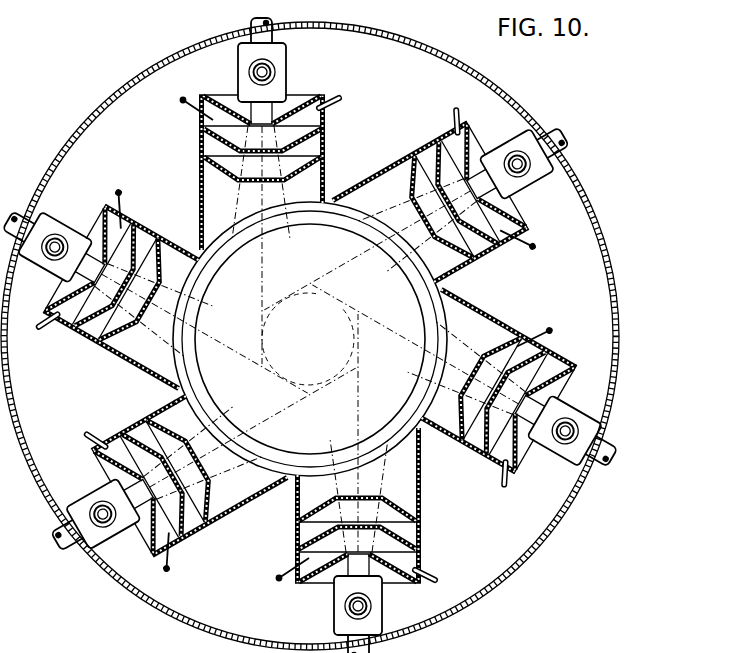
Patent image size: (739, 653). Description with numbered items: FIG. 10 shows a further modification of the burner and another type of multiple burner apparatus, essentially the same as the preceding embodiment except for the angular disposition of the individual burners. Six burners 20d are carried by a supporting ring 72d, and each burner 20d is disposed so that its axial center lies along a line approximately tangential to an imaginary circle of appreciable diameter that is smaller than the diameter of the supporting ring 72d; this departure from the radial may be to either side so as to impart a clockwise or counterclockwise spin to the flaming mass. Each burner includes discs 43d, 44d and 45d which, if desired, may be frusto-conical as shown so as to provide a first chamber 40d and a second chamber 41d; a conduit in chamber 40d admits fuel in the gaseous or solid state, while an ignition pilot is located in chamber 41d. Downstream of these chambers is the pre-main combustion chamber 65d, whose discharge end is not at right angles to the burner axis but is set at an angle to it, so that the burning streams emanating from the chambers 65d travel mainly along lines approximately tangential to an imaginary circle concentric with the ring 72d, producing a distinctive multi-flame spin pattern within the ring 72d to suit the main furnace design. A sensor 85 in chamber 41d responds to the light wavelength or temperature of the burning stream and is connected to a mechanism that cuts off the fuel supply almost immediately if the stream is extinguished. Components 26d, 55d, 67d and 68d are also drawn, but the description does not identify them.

The burner 20d is at (332, 157).
The motor 26d is at (278, 68).
The chamber 40d is at (212, 122).
The chamber 41d is at (210, 152).
The disc 43d is at (63, 296).
The disc 44d is at (120, 425).
The disc 45d is at (130, 430).
The discharge tube 55d is at (340, 104).
The pre-main combustion chamber 65d is at (310, 339).
The side wall 67d is at (205, 224).
The outer casing 68d is at (600, 237).
The supporting ring 72d is at (185, 398).
The sensor 85 is at (180, 103).